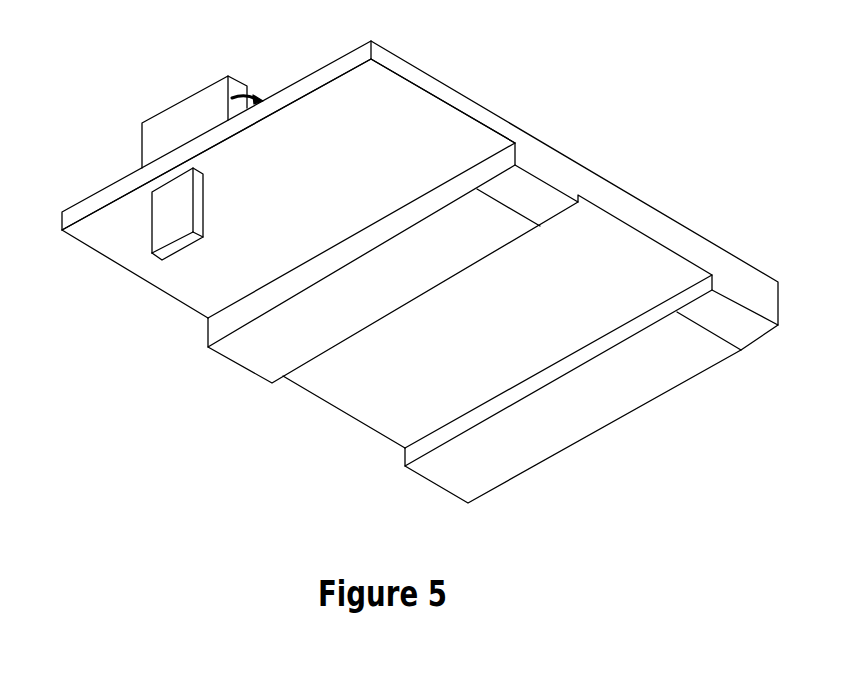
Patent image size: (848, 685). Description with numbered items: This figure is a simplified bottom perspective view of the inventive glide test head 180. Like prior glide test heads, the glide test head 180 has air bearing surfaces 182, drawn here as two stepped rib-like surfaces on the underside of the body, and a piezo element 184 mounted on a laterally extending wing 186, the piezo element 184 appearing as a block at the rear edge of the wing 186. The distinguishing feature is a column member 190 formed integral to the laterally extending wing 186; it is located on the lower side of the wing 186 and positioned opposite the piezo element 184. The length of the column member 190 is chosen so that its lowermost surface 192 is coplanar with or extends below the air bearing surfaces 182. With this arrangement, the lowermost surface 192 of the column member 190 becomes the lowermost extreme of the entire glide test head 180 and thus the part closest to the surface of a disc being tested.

The glide test head 180 is at (598, 140).
The air bearing surfaces 182 is at (318, 323).
The piezo element 184 is at (180, 123).
The laterally extending wing 186 is at (372, 112).
The column member 190 is at (170, 213).
The lowermost surface 192 is at (177, 247).